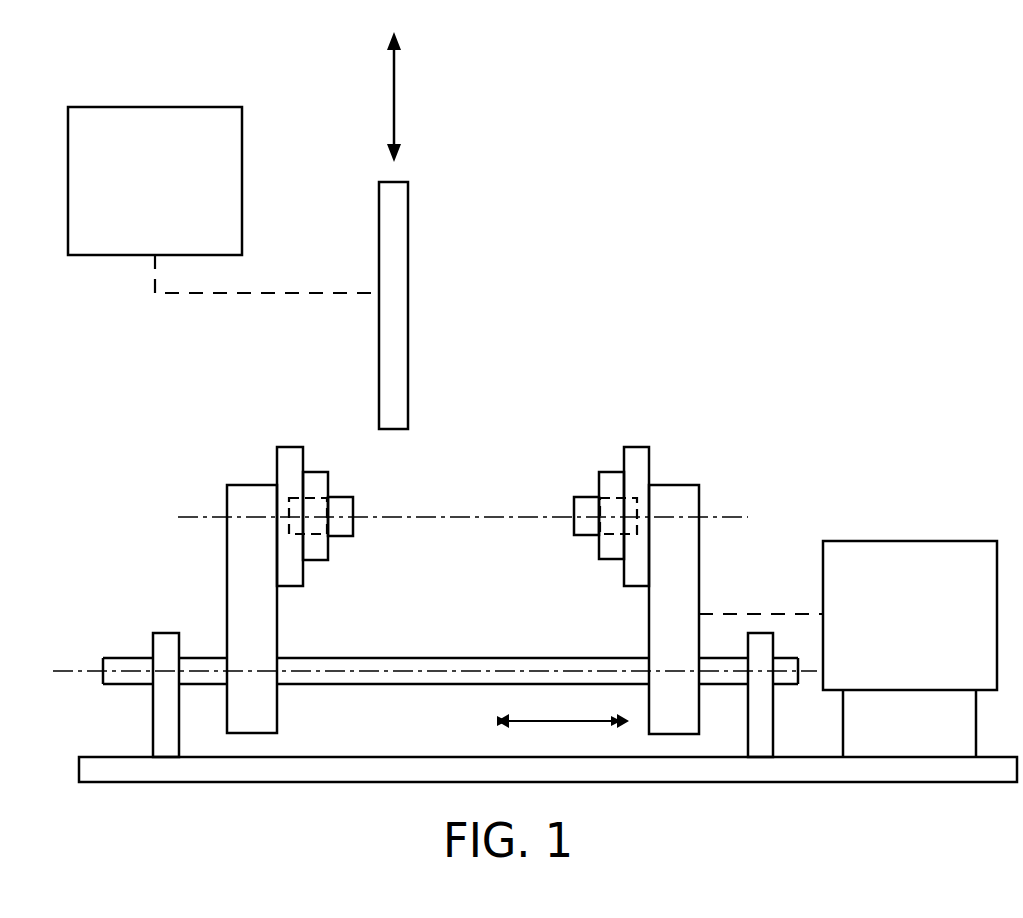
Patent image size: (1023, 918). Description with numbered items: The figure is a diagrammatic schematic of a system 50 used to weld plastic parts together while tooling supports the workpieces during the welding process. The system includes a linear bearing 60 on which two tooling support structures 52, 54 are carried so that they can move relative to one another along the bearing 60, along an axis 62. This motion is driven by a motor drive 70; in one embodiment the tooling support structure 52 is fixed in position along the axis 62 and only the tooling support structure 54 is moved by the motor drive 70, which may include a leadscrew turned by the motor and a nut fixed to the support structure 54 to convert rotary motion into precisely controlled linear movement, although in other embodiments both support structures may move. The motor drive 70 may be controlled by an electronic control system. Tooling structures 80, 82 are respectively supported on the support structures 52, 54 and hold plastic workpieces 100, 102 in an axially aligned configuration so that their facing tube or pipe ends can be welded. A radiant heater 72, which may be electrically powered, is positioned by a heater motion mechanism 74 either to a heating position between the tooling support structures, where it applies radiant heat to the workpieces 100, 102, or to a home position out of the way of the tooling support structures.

The system 50 is at (713, 358).
The tooling support structure 52 is at (238, 492).
The tooling support structure 54 is at (672, 495).
The linear bearing 60 is at (518, 657).
The axis 62 is at (530, 722).
The motor drive 70 is at (892, 541).
The radiant heater 72 is at (412, 265).
The heater motion mechanism 74 is at (132, 107).
The tooling structure 80 is at (291, 453).
The tooling structure 82 is at (635, 453).
The workpiece 100 is at (334, 495).
The workpiece 102 is at (581, 493).